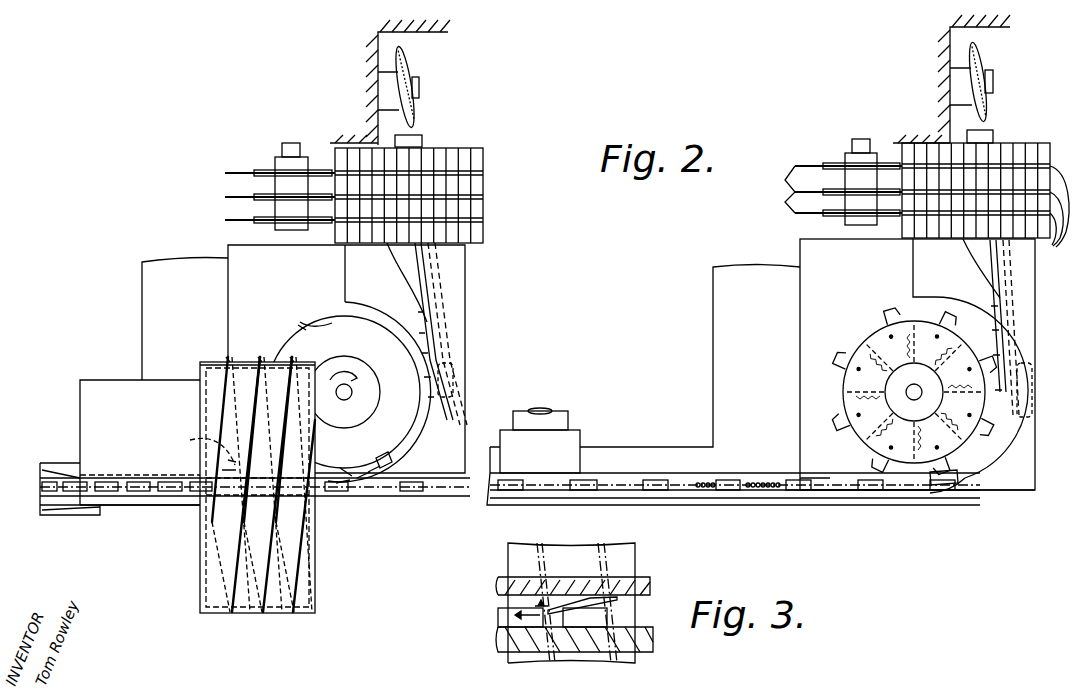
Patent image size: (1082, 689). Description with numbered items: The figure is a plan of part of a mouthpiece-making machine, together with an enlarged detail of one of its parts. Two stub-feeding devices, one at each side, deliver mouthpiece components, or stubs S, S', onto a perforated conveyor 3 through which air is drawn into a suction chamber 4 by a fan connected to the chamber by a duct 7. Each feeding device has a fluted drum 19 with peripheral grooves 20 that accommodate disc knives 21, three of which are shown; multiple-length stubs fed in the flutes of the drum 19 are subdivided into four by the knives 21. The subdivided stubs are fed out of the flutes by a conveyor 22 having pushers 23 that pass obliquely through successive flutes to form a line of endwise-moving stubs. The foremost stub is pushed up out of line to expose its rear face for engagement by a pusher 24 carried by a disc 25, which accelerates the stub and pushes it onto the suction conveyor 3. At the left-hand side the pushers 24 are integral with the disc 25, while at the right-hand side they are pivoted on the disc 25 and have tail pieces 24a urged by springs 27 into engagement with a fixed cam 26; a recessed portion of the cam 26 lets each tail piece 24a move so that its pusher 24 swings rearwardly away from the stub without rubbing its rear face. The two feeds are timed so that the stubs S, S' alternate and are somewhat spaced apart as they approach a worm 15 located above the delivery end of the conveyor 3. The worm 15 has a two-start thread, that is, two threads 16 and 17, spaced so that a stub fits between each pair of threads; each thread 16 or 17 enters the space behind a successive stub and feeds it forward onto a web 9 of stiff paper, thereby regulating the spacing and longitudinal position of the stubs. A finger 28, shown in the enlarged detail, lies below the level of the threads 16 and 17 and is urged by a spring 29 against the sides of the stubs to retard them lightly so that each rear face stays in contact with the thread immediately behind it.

In FIG. 2, the perforated conveyor 3 is at (692, 495).
In FIG. 2, the suction chamber 4 is at (488, 508).
In FIG. 2, the duct 7 is at (553, 412).
In FIG. 2, the web of stiff paper 9 is at (148, 498).
In FIG. 2, the worm 15 is at (198, 392).
In FIG. 2, the thread 16 is at (223, 410).
In FIG. 2, the thread 17 is at (257, 362).
In FIG. 2, the fluted drum 19 is at (1022, 152).
In FIG. 2, the peripheral grooves 20 is at (1056, 238).
In FIG. 2, the disc knives 21 is at (800, 183).
In FIG. 2, the conveyor 22 is at (1003, 282).
In FIG. 2, the pushers 23 is at (1000, 300).
In FIG. 2, the pusher 24 is at (986, 433).
In FIG. 2, the tail pieces 24a is at (872, 461).
In FIG. 2, the disc 25 is at (888, 340).
In FIG. 2, the fixed cam 26 is at (844, 392).
In FIG. 2, the springs 27 is at (960, 477).
In FIG. 2, the finger 28 is at (198, 450).
In FIG. 3, the finger 28 is at (560, 606).
In FIG. 3, the spring 29 is at (530, 601).
In FIG. 2, the stub S is at (605, 504).
In FIG. 2, the stub S' is at (392, 449).